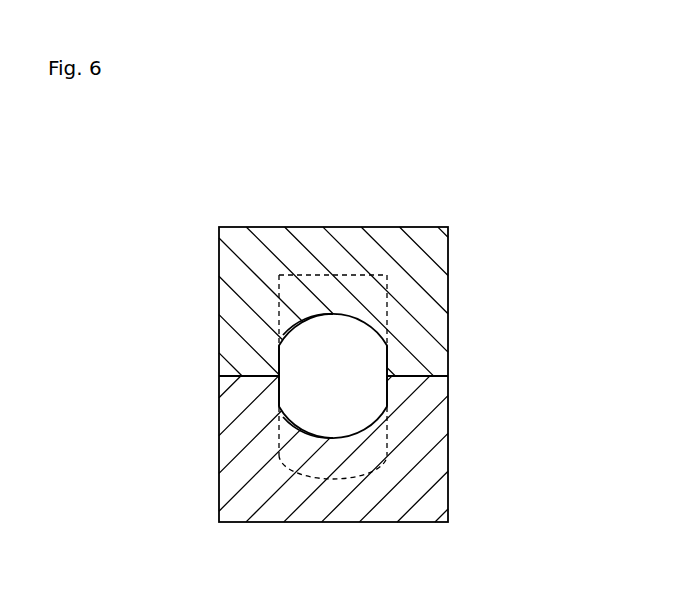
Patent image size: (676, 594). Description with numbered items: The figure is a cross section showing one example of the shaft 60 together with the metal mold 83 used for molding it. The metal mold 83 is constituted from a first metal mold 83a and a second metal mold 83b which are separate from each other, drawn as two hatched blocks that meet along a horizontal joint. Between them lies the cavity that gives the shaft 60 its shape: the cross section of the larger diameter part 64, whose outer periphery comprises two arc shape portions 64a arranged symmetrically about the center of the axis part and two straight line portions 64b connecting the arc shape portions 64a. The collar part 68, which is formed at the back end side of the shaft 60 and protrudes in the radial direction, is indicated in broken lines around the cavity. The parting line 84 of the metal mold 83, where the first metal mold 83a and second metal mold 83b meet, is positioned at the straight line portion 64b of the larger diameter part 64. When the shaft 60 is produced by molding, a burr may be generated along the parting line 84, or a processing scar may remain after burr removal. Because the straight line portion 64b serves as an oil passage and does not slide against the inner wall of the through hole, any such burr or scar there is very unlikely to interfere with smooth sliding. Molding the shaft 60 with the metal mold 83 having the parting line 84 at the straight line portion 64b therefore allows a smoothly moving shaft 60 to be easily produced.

The shaft 60 is at (277, 397).
The larger diameter part 64 is at (338, 357).
The arc shape portions 64a is at (308, 320).
The straight line portions 64b is at (278, 350).
The collar part 68 is at (313, 274).
The metal mold 83 is at (537, 308).
The first metal mold 83a is at (422, 333).
The second metal mold 83b is at (423, 406).
The parting line 84 is at (272, 377).